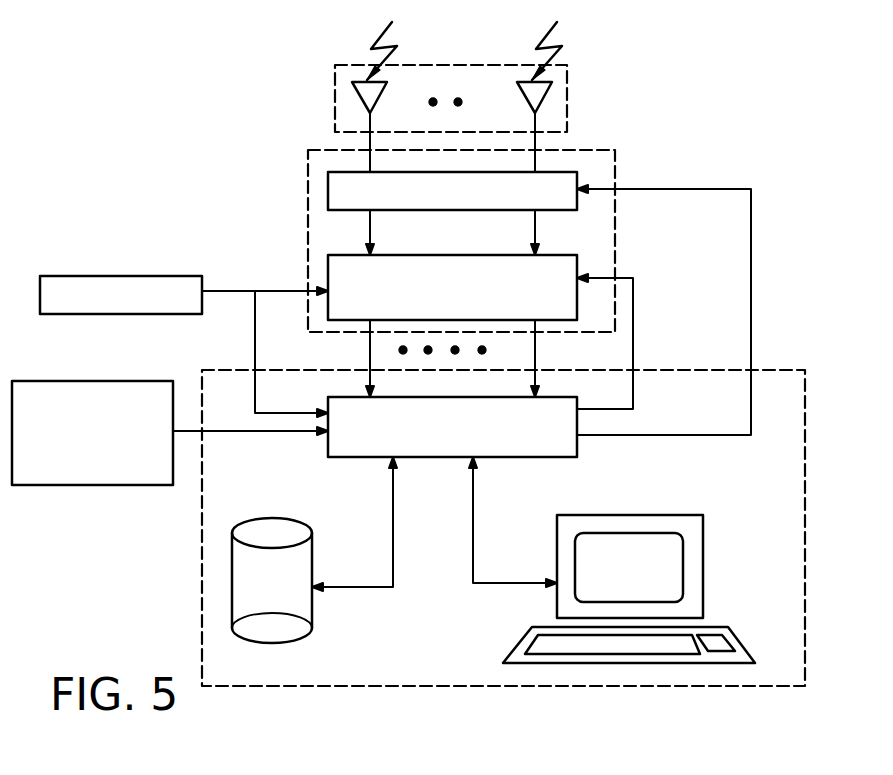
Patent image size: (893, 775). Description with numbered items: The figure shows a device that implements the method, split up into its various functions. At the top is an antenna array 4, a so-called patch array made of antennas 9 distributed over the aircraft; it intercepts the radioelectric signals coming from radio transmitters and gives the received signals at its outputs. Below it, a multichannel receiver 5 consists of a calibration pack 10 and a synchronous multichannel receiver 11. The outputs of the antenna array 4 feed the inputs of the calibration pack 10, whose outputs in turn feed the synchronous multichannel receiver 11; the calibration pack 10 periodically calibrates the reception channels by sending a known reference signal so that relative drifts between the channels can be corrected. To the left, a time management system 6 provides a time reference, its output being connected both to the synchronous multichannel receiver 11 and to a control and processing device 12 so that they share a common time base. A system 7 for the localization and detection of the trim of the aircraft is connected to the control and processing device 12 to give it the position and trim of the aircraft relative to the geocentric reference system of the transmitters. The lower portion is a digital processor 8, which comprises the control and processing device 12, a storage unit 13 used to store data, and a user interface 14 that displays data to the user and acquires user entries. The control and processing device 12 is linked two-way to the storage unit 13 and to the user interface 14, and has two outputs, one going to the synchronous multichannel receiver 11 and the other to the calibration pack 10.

The antenna array 4 is at (567, 95).
The multichannel receiver 5 is at (491, 228).
The time management system 6 is at (87, 276).
The system for the localization and detection of the trim of the aircraft 7 is at (65, 487).
The digital processor 8 is at (806, 408).
The antennas 9 is at (358, 90).
The calibration pack 10 is at (327, 192).
The synchronous multichannel receiver 11 is at (580, 258).
The control and processing device 12 is at (543, 457).
The storage unit 13 is at (230, 575).
The user interface 14 is at (704, 538).